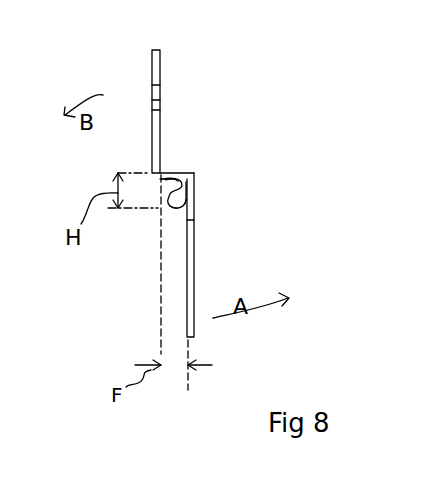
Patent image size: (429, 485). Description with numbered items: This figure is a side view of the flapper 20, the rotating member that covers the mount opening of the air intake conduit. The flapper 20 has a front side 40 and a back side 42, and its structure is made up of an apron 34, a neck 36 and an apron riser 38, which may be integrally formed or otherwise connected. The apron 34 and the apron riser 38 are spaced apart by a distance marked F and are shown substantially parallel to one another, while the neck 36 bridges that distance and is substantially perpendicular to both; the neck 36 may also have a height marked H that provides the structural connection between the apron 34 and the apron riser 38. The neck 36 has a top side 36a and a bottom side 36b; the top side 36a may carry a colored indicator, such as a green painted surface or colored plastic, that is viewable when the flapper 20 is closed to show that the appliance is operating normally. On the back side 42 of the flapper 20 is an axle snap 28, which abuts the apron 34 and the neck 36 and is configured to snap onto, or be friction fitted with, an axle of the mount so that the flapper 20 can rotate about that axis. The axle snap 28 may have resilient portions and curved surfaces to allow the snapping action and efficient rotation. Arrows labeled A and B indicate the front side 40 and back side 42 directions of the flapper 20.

The flapper 20 is at (235, 117).
The axle snap 28 is at (228, 181).
The apron 34 is at (192, 268).
The neck 36 is at (184, 181).
The top side 36a is at (172, 172).
The bottom side 36b is at (195, 205).
The apron riser 38 is at (160, 100).
The front side 40 is at (213, 215).
The back side 42 is at (135, 117).